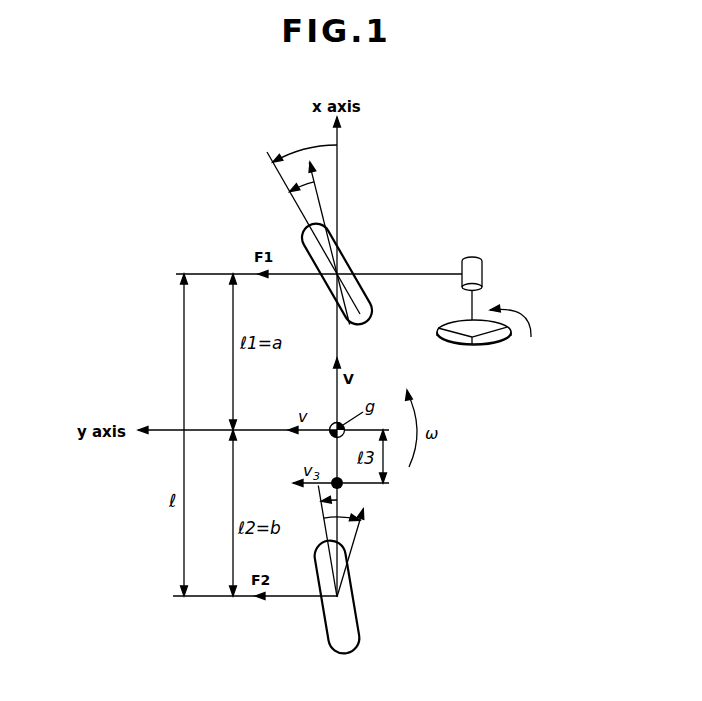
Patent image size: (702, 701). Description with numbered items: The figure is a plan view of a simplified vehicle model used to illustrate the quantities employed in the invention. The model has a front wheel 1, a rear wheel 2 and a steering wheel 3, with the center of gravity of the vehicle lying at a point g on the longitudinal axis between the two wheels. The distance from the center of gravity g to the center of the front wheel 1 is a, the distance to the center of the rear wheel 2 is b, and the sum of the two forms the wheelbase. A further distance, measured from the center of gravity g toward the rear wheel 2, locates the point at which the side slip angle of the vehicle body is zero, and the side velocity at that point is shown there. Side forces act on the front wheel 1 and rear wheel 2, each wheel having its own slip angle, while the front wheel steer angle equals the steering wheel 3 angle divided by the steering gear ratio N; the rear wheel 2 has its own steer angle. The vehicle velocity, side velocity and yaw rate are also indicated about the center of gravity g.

The front wheel 1 is at (347, 258).
The rear wheel 2 is at (357, 617).
The steering wheel 3 is at (492, 348).